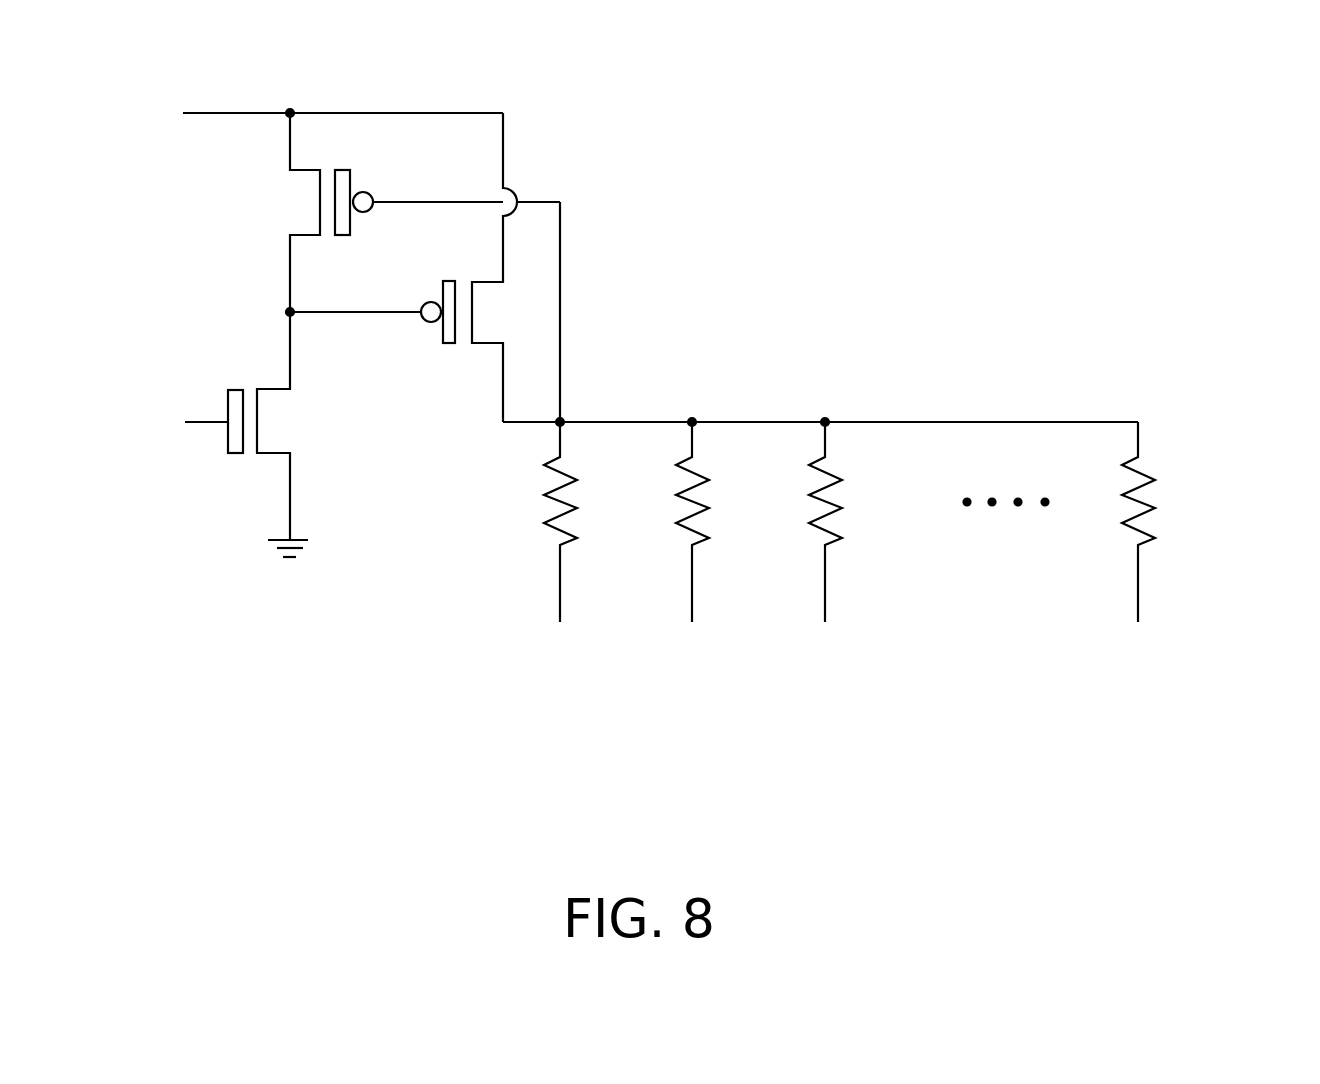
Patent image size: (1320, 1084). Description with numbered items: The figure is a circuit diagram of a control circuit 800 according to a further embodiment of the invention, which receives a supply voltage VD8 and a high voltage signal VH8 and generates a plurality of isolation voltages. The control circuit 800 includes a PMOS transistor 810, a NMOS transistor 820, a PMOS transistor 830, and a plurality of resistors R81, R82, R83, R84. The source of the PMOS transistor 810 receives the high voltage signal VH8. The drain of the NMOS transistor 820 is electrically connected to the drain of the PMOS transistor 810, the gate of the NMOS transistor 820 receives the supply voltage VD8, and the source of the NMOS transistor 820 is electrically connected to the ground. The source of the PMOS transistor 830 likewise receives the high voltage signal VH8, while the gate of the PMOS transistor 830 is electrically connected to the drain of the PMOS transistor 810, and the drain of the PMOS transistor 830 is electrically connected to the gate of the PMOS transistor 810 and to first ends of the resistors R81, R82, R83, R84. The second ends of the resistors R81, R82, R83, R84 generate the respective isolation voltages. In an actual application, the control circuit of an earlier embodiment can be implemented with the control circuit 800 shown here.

The control circuit 800 is at (1287, 795).
The PMOS transistor 810 is at (396, 212).
The NMOS transistor 820 is at (219, 434).
The PMOS transistor 830 is at (394, 351).
The resistor R81 is at (587, 522).
The resistor R82 is at (721, 522).
The resistor R83 is at (855, 522).
The resistor R84 is at (1169, 522).
The high voltage signal VH8 is at (316, 117).
The supply voltage VD8 is at (179, 424).